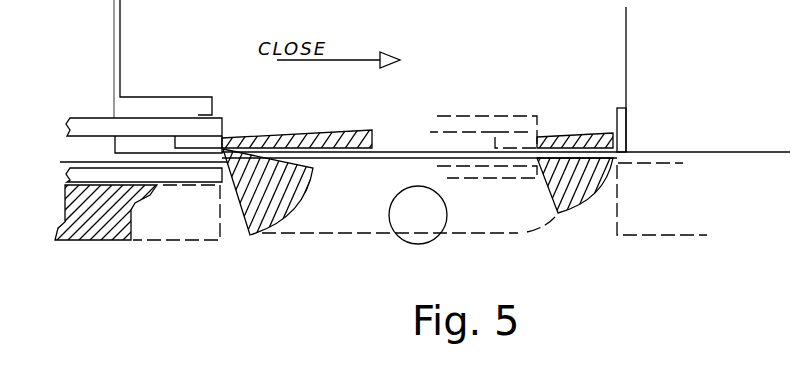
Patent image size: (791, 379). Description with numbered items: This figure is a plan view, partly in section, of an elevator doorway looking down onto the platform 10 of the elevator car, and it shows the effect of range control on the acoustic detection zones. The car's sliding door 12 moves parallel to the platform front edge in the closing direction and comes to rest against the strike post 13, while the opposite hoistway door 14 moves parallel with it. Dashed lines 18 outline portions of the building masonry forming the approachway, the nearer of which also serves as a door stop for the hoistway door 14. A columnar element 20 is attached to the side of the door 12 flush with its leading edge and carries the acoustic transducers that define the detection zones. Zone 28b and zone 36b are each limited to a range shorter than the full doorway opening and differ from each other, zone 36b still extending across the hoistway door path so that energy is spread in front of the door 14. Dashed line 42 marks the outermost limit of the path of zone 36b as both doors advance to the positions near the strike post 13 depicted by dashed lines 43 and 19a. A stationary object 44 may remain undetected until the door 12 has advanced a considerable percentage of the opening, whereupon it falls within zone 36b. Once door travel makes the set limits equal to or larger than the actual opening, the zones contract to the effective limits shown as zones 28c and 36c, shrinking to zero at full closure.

The platform 10 is at (627, 50).
The sliding door 12 is at (224, 133).
The strike post 13 is at (627, 127).
The hoistway door 14 is at (105, 167).
The dashed lines 18 is at (183, 241).
The dashed lines 19a is at (533, 180).
The columnar element 20 is at (224, 138).
The zone 28b is at (323, 130).
The zone 28c is at (590, 133).
The zone 36b is at (243, 220).
The zone 36c is at (588, 203).
The dashed line 42 is at (352, 235).
The dashed lines 43 is at (488, 115).
The object 44 is at (447, 210).